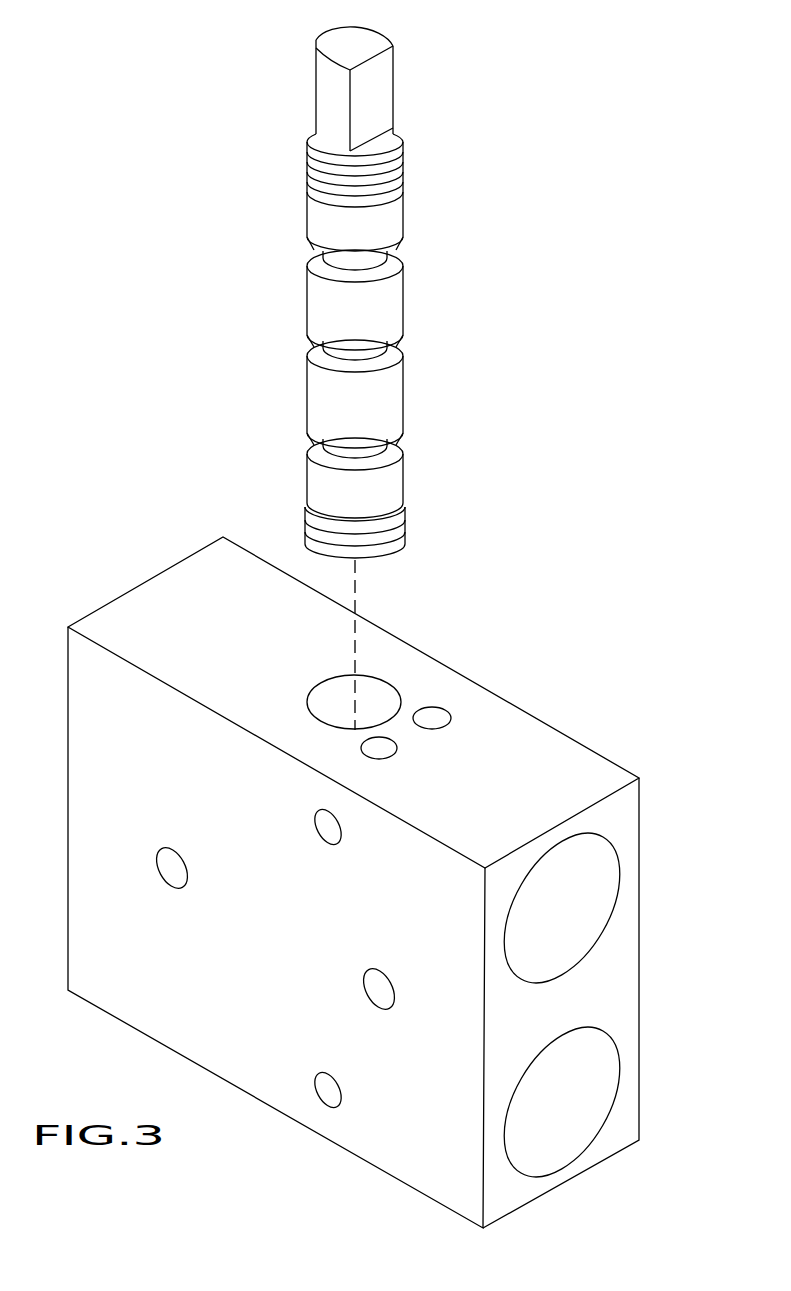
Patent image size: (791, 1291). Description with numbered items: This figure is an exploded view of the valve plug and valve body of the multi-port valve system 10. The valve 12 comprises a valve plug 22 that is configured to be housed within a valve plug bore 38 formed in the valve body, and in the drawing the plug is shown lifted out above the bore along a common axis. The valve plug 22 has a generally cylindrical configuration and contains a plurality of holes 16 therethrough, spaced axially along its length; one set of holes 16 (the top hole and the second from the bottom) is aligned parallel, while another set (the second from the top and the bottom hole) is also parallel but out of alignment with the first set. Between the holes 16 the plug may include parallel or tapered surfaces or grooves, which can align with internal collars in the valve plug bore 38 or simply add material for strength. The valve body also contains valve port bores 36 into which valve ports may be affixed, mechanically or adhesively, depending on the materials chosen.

The multi-port valve system 10 is at (580, 739).
The valve 12 is at (446, 416).
The holes 16 is at (404, 212).
The valve plug 22 is at (330, 52).
The valve port bores 36 is at (600, 895).
The valve plug bore 38 is at (390, 698).